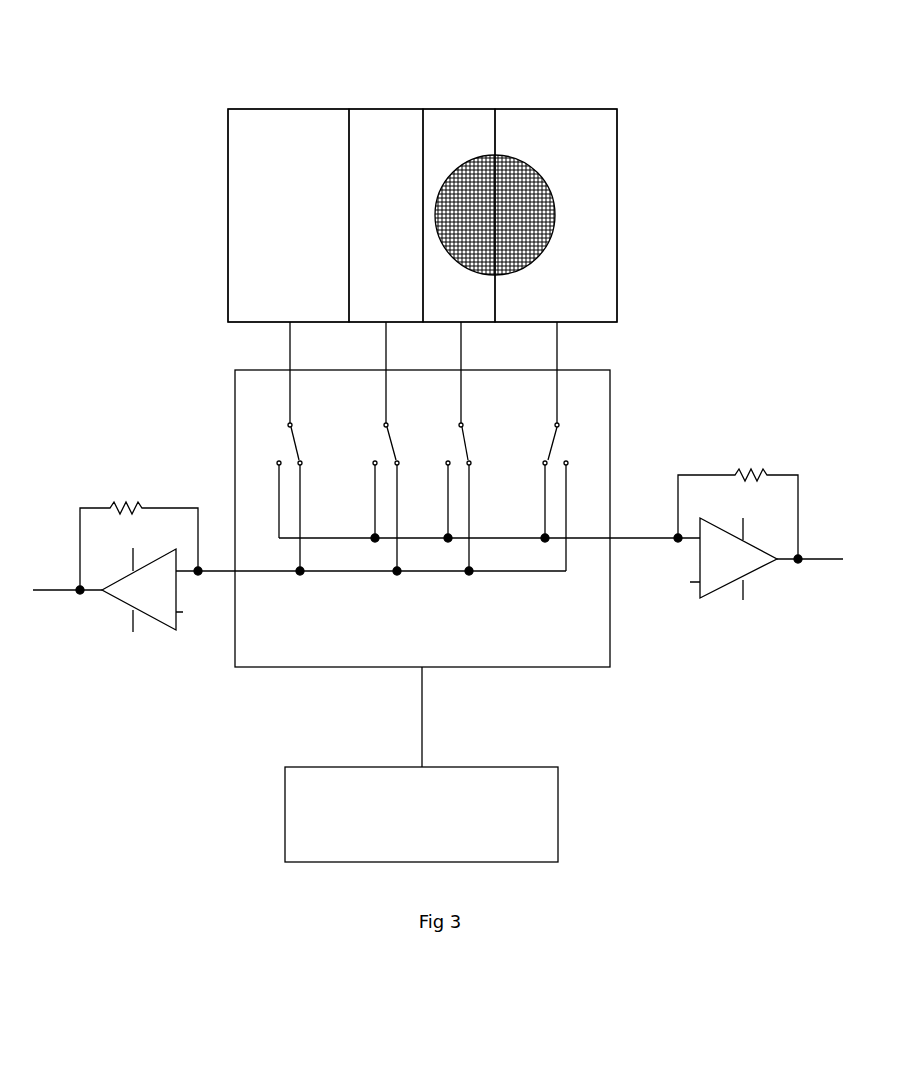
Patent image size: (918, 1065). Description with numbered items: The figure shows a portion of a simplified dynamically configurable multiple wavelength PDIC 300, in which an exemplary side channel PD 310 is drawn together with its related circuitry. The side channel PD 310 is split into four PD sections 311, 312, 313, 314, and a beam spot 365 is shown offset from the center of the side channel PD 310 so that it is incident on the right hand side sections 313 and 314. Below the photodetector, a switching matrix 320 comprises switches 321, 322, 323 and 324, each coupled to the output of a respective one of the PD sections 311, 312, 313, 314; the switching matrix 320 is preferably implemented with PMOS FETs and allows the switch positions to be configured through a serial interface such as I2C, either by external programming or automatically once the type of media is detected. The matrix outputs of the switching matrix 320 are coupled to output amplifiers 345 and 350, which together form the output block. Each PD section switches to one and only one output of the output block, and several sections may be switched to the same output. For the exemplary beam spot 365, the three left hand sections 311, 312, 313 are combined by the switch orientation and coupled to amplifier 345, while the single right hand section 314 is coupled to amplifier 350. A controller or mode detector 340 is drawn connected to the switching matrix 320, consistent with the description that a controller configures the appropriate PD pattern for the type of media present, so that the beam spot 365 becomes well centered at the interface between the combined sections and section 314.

The dynamically configurable multiple wavelength PDIC 300 is at (218, 730).
The side channel PD 310 is at (200, 338).
The PD section 311 is at (305, 133).
The PD section 312 is at (390, 133).
The PD section 313 is at (458, 133).
The PD section 314 is at (544, 133).
The beam spot 365 is at (557, 217).
The switching matrix 320 is at (612, 418).
The switch 321 is at (306, 447).
The switch 322 is at (400, 447).
The switch 323 is at (477, 447).
The switch 324 is at (550, 447).
The controller or mode detector 340 is at (558, 800).
The output amplifier 345 is at (167, 620).
The output amplifier 350 is at (718, 583).